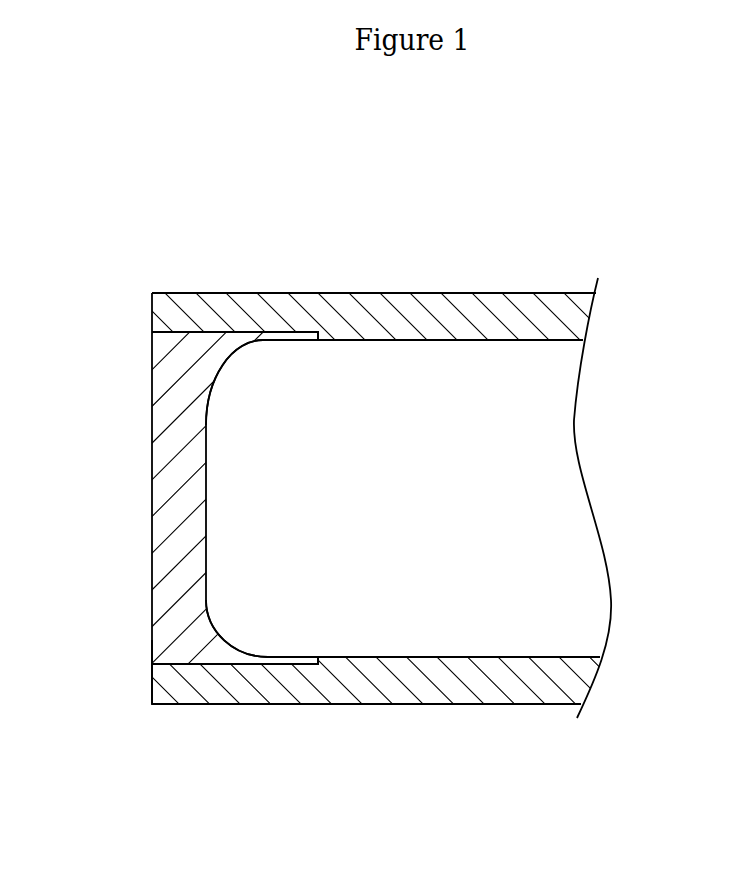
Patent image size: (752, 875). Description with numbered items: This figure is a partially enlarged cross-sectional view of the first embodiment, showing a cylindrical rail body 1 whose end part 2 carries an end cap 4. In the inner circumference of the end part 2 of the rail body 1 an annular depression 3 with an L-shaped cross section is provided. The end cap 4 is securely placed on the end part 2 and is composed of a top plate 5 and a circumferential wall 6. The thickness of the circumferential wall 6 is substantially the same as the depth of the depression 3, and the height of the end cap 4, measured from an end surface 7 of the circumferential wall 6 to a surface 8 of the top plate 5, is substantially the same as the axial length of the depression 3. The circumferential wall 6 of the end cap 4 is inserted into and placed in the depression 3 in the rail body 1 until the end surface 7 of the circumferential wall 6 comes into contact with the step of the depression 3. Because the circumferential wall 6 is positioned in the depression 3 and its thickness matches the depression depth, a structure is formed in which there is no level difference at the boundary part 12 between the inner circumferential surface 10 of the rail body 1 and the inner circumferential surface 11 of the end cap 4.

The rail body 1 is at (387, 446).
The end part 2 is at (190, 292).
The annular depression 3 is at (303, 341).
The end cap 4 is at (194, 474).
The top plate 5 is at (152, 420).
The circumferential wall 6 is at (277, 342).
The end surface 7 is at (318, 660).
The surface 8 is at (150, 652).
The inner circumferential surface 10 is at (400, 657).
The inner circumferential surface 11 is at (278, 656).
The boundary part 12 is at (315, 657).